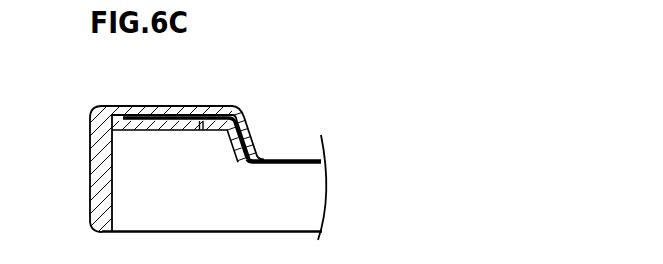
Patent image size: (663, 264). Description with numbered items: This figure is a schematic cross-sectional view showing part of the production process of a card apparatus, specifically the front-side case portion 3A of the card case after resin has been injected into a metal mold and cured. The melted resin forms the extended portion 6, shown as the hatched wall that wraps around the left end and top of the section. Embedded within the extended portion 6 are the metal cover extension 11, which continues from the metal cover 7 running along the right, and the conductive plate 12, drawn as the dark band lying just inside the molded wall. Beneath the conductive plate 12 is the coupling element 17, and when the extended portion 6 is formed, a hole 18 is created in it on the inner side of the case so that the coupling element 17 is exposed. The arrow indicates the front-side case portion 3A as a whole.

The extended portion 6 is at (94, 152).
The metal cover extension 11 is at (239, 108).
The conductive plate 12 is at (147, 114).
The coupling element 17 is at (211, 113).
The hole 18 is at (206, 132).
The metal cover 7 is at (282, 158).
The front-side case portion 3A is at (376, 178).